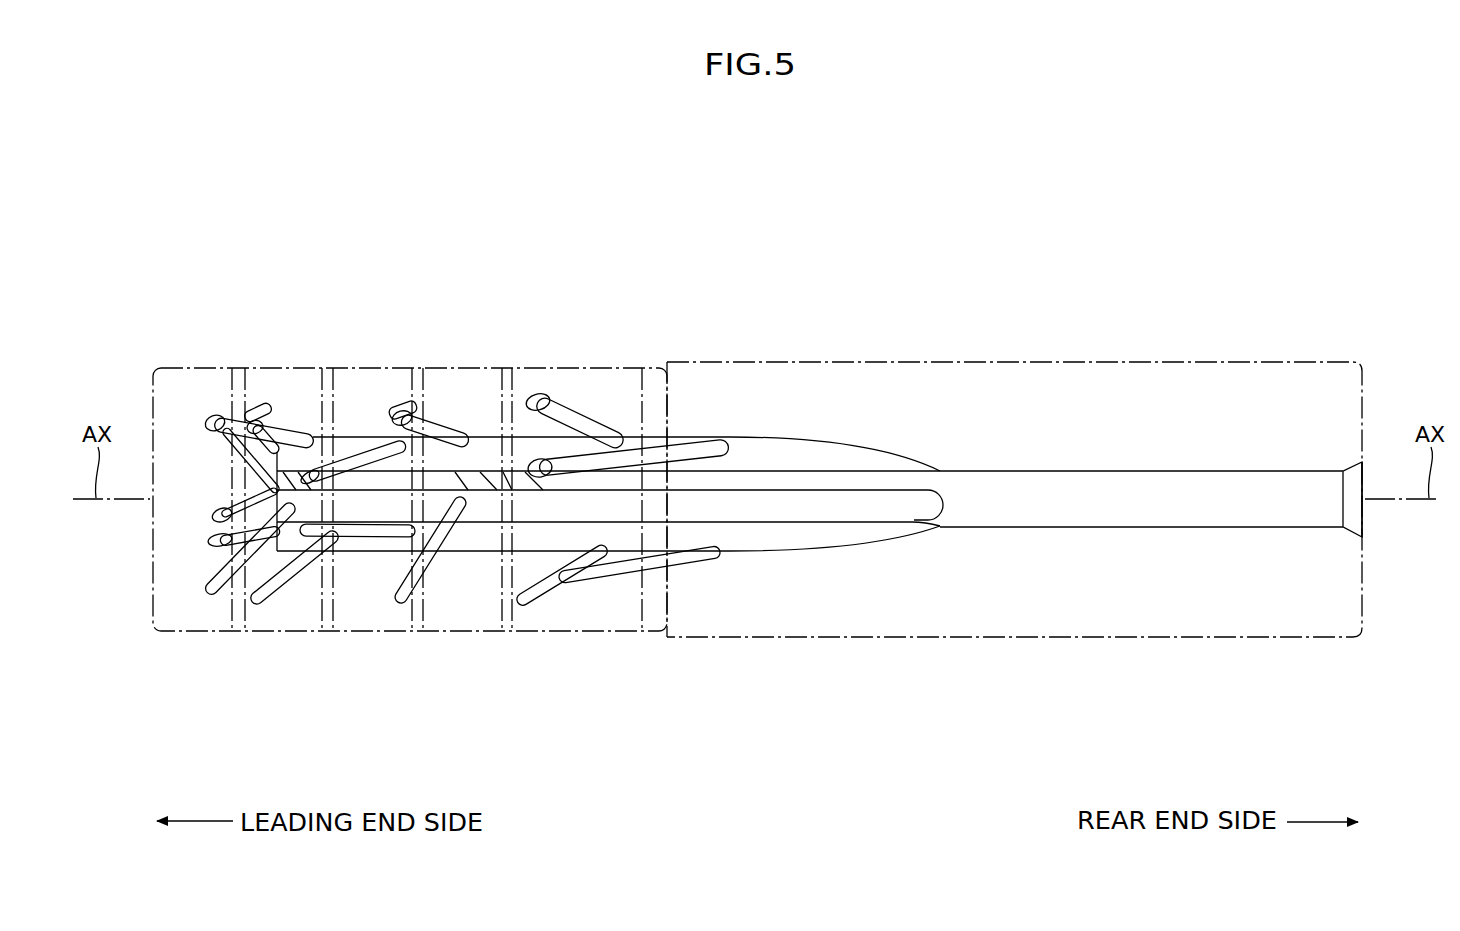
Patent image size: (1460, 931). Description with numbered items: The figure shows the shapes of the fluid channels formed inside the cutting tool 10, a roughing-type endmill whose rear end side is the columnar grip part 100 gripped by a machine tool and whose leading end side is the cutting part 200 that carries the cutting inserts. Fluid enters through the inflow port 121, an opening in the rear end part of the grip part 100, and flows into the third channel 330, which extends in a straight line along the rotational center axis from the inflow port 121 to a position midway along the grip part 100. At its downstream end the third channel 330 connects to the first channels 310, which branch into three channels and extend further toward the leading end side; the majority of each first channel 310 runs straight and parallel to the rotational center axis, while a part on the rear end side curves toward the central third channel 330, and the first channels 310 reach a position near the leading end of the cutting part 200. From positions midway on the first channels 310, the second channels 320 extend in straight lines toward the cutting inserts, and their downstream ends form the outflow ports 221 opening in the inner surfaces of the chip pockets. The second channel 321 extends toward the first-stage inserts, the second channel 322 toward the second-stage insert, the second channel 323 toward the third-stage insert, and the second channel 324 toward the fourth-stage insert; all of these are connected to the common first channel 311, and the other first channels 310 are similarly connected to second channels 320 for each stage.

The cutting tool 10 is at (1302, 228).
The grip part 100 is at (1080, 362).
The inflow port 121 is at (1364, 518).
The cutting part 200 is at (482, 366).
The outflow port 221 is at (211, 408).
The first channel 310 is at (788, 455).
The first channel 311 is at (830, 507).
The second channel 320 is at (416, 505).
The second channel 321 is at (212, 518).
The second channel 322 is at (352, 590).
The second channel 323 is at (450, 567).
The second channel 324 is at (537, 567).
The third channel 330 is at (1065, 510).